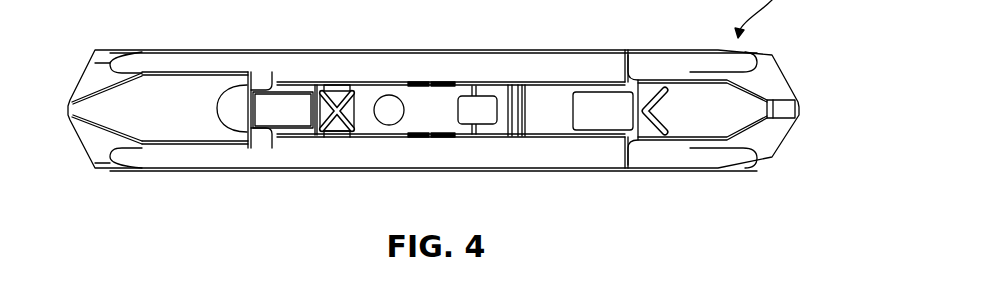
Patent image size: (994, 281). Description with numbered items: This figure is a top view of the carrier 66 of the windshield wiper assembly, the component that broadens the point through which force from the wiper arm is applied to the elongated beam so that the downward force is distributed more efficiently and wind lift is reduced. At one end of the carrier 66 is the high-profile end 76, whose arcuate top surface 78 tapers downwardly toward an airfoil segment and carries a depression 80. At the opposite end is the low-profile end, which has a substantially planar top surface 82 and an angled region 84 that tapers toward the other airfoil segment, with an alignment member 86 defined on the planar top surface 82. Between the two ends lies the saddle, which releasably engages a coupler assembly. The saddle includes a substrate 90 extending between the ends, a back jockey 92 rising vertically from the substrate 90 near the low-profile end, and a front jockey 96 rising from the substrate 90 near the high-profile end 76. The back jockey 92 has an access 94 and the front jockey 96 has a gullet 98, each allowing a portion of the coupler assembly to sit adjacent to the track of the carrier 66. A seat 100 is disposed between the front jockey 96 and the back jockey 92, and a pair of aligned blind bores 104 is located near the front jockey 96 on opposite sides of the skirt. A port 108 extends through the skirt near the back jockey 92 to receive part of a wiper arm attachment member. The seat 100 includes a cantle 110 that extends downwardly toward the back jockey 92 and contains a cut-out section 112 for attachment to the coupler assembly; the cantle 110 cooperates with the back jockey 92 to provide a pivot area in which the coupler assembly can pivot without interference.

The carrier 66 is at (148, 176).
The high-profile end 76 is at (93, 162).
The arcuate top surface 78 is at (160, 83).
The depression 80 is at (233, 103).
The planar top surface 82 is at (707, 92).
The angled region 84 is at (782, 108).
The alignment member 86 is at (665, 113).
The substrate 90 is at (580, 67).
The back jockey 92 is at (553, 140).
The access 94 is at (617, 118).
The front jockey 96 is at (260, 143).
The gullet 98 is at (283, 117).
The seat 100 is at (428, 108).
The blind bores 104 is at (333, 137).
The port 108 is at (432, 137).
The cantle 110 is at (480, 137).
The cut-out section 112 is at (485, 107).